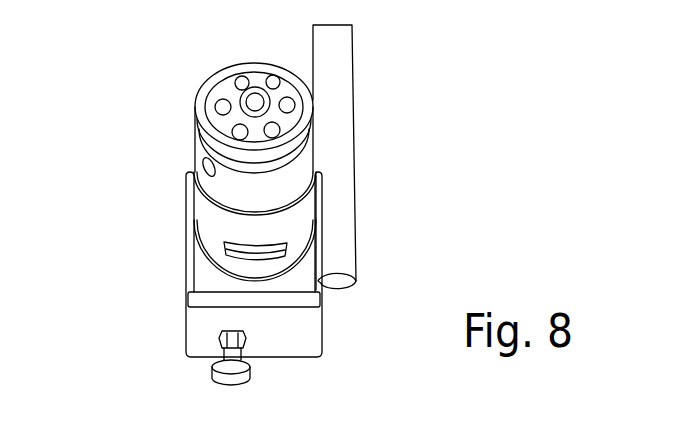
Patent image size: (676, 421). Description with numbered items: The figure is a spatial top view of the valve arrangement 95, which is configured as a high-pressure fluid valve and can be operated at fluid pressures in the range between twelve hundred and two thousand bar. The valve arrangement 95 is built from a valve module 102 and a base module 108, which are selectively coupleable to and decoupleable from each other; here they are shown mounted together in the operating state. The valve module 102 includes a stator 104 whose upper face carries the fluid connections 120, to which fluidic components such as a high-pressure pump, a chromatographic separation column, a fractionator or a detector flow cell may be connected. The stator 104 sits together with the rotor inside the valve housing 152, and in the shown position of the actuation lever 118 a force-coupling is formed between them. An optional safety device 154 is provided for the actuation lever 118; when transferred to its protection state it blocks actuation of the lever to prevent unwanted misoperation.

The valve arrangement 95 is at (389, 71).
The valve module 102 is at (108, 55).
The stator 104 is at (291, 124).
The base module 108 is at (108, 179).
The actuation lever 118 is at (334, 183).
The fluid connections 120 is at (290, 93).
The valve housing 152 is at (293, 185).
The safety device 154 is at (252, 366).